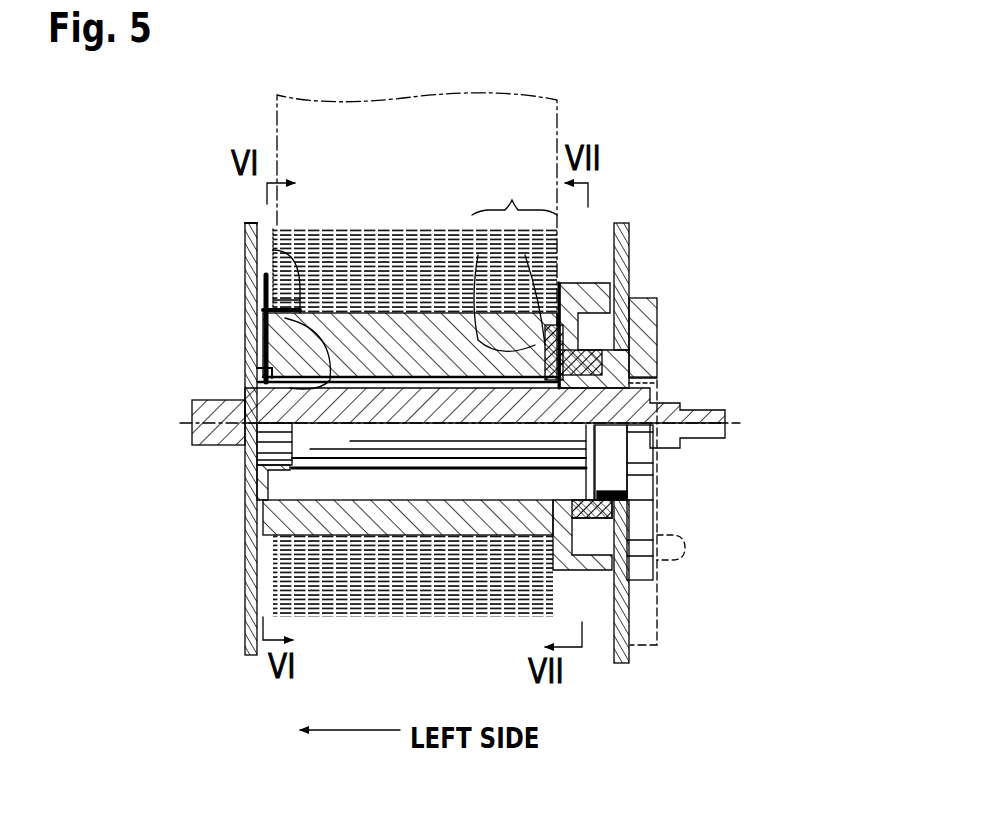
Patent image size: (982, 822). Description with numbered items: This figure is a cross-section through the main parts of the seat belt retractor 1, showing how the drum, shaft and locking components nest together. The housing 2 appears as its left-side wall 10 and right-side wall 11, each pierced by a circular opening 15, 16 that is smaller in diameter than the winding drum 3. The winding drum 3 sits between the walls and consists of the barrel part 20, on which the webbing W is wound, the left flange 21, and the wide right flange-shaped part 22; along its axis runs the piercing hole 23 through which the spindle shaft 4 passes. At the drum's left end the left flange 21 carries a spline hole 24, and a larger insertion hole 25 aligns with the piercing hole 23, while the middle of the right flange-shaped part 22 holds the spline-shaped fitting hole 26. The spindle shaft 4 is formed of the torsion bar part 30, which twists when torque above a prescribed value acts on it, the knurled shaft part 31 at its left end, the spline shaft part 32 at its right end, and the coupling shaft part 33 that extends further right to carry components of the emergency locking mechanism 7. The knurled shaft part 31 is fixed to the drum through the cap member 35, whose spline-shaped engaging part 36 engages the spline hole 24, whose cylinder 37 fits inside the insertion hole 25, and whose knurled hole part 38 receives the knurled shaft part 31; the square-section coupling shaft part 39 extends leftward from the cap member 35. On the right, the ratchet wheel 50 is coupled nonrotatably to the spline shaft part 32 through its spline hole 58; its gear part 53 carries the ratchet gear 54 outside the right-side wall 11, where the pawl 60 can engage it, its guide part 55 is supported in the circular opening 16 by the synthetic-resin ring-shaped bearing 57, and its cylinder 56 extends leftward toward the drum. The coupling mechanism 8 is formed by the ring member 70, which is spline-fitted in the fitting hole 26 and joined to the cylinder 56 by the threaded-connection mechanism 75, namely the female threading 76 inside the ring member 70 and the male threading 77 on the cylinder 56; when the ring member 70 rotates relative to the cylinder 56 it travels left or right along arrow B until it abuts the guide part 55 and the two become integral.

The seat belt retractor 1 is at (705, 165).
The housing 2 is at (243, 226).
The winding drum 3 is at (360, 540).
The spindle shaft 4 is at (432, 372).
The emergency locking mechanism 7 is at (698, 570).
The coupling mechanism 8 is at (480, 318).
The left-side wall 10 is at (243, 262).
The right-side wall 11 is at (628, 258).
The circular opening 15 is at (258, 350).
The circular opening 16 is at (638, 358).
The barrel part 20 is at (396, 302).
The left flange 21 is at (276, 560).
The right flange-shaped part 22 is at (580, 560).
The piercing hole 23 is at (410, 345).
The spline hole 24 is at (258, 468).
The insertion hole 25 is at (258, 368).
The fitting hole 26 is at (636, 330).
The torsion bar part 30 is at (428, 462).
The knurled shaft part 31 is at (237, 447).
The spline shaft part 32 is at (640, 374).
The coupling shaft part 33 is at (725, 412).
The cap member 35 is at (197, 447).
The engaging part 36 is at (276, 330).
The cylinder 37 is at (296, 322).
The knurled hole part 38 is at (292, 388).
The coupling shaft part 39 is at (195, 400).
The ratchet wheel 50 is at (658, 485).
The gear part 53 is at (640, 300).
The ratchet gear 54 is at (658, 500).
The guide part 55 is at (636, 345).
The cylinder 56 is at (534, 321).
The ring-shaped bearing 57 is at (618, 497).
The spline hole 58 is at (640, 392).
The pawl 60 is at (657, 588).
The ring member 70 is at (582, 284).
The threaded-connection mechanism 75 is at (514, 191).
The female threading 76 is at (480, 320).
The male threading 77 is at (544, 320).
The webbing W is at (277, 118).
The arrow B is at (553, 540).